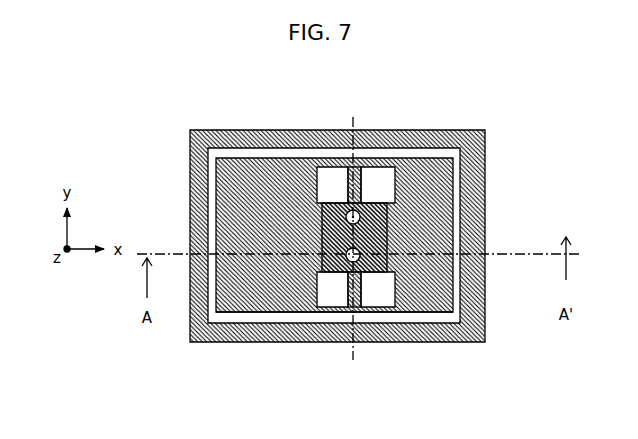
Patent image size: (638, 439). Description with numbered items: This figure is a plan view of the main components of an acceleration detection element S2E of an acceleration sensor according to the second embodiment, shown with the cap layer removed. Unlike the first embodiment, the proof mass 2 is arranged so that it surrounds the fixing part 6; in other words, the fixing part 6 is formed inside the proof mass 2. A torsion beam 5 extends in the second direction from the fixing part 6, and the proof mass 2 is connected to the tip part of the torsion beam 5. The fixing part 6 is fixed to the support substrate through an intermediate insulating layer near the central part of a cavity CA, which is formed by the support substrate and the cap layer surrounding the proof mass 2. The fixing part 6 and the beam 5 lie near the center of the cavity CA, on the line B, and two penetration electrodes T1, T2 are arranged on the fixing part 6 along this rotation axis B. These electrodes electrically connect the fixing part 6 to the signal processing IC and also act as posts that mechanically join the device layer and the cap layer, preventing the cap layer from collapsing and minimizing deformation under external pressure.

The acceleration detection element S2E is at (206, 126).
The proof mass 2 is at (245, 163).
The cavity CA is at (262, 312).
The torsion beam 5 is at (360, 181).
The penetration electrode T1 is at (347, 247).
The penetration electrode T2 is at (366, 212).
The fixing part 6 is at (362, 254).
The line B is at (355, 227).